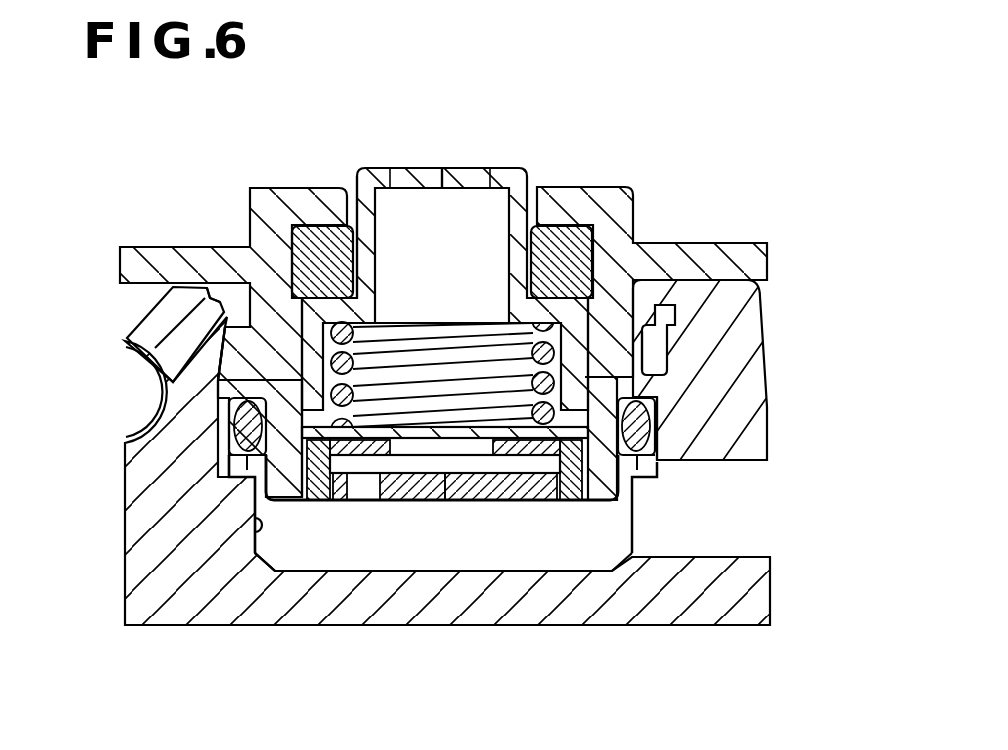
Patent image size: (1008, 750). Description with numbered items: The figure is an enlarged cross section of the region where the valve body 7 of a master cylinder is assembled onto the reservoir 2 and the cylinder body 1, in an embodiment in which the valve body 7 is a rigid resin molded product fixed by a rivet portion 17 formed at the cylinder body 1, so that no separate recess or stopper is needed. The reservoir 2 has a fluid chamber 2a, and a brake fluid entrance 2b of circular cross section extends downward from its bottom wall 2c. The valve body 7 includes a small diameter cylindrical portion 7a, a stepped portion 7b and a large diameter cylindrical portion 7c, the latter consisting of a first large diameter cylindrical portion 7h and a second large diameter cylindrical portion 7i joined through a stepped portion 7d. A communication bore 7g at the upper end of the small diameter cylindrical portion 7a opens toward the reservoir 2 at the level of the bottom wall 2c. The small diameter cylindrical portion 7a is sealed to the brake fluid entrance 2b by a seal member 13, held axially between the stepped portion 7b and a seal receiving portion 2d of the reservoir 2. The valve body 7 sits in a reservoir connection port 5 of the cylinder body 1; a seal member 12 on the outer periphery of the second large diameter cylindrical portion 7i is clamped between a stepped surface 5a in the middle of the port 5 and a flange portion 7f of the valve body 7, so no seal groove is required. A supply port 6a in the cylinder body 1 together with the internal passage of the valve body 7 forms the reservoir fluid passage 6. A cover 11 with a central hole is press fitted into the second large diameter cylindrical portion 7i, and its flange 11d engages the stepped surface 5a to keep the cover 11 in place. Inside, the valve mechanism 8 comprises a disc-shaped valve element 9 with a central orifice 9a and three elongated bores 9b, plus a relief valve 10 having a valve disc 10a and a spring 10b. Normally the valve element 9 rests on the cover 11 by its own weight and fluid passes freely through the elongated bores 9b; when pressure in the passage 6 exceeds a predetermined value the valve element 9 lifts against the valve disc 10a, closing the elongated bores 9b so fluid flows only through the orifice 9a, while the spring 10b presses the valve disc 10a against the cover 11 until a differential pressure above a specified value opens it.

The cylinder body 1 is at (142, 314).
The reservoir 2 is at (122, 268).
The fluid chamber 2a is at (616, 160).
The brake fluid entrance 2b is at (653, 262).
The bottom wall 2c is at (148, 246).
The seal receiving portion 2d is at (330, 245).
The reservoir connection port 5 is at (255, 525).
The stepped surface 5a is at (236, 464).
The reservoir fluid passage 6 is at (732, 538).
The supply port 6a is at (750, 512).
The valve body 7 is at (432, 160).
The small diameter cylindrical portion 7a is at (365, 225).
The stepped portion 7b is at (277, 223).
The large diameter cylindrical portion 7c is at (850, 333).
The stepped portion 7d is at (277, 372).
The flange portion 7f is at (242, 388).
The communication bore 7g is at (482, 185).
The first large diameter cylindrical portion 7h is at (636, 357).
The second large diameter cylindrical portion 7i is at (737, 420).
The valve mechanism 8 is at (362, 506).
The valve element 9 is at (385, 510).
The orifice 9a is at (413, 510).
The elongated bores 9b is at (299, 512).
The relief valve 10 is at (578, 678).
The valve disc 10a is at (518, 500).
The spring 10b is at (568, 500).
The cover 11 is at (257, 545).
The flange 11d is at (230, 448).
The seal member 12 is at (232, 409).
The seal member 13 is at (557, 245).
The rivet portion 17 is at (226, 318).